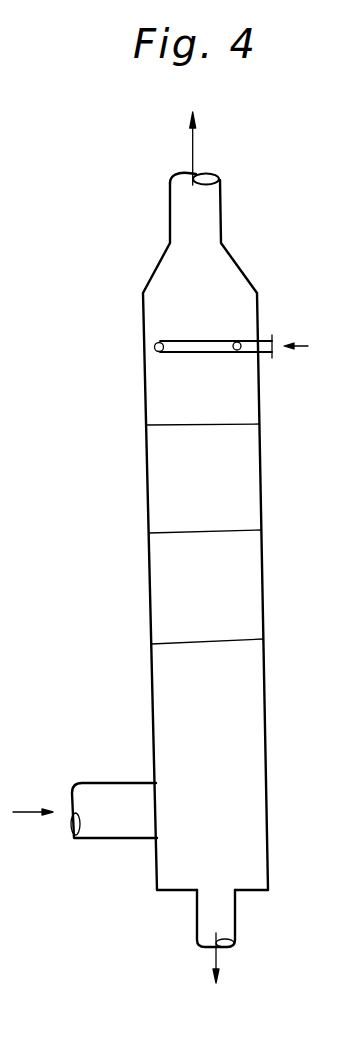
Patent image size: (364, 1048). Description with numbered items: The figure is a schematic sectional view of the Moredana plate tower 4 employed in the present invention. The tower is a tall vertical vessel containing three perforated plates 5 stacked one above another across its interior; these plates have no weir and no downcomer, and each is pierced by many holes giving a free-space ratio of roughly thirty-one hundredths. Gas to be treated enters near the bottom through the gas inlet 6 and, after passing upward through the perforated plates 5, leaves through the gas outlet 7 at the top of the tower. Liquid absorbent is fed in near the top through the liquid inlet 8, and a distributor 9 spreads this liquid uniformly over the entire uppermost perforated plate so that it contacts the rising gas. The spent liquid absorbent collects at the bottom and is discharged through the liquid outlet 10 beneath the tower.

The Moredana plate tower 4 is at (243, 267).
The perforated plate 5 is at (274, 424).
The gas inlet 6 is at (93, 832).
The gas outlet 7 is at (215, 197).
The liquid inlet 8 is at (265, 338).
The distributor 9 is at (163, 328).
The liquid outlet 10 is at (231, 924).